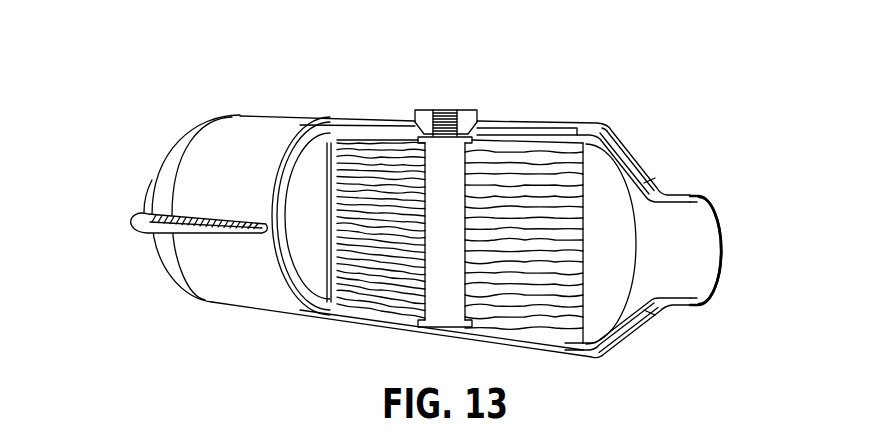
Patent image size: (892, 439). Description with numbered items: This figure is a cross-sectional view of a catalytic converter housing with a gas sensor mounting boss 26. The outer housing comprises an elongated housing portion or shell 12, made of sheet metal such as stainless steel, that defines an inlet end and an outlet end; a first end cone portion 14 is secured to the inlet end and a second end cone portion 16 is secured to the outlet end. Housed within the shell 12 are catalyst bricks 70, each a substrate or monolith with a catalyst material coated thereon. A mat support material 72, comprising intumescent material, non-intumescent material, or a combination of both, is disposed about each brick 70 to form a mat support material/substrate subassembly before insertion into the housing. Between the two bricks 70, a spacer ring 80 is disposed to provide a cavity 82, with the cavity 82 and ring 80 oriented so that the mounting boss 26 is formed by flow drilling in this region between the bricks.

The elongated housing portion or shell 12 is at (490, 121).
The first end cone portion 14 is at (121, 176).
The second end cone portion 16 is at (676, 141).
The threaded fitting 26 is at (445, 88).
The substrate, support, monolith, or brick 70 is at (350, 164).
The mat support material 72 is at (537, 133).
The spacer ring 80 is at (438, 168).
The cavity 82 is at (420, 118).